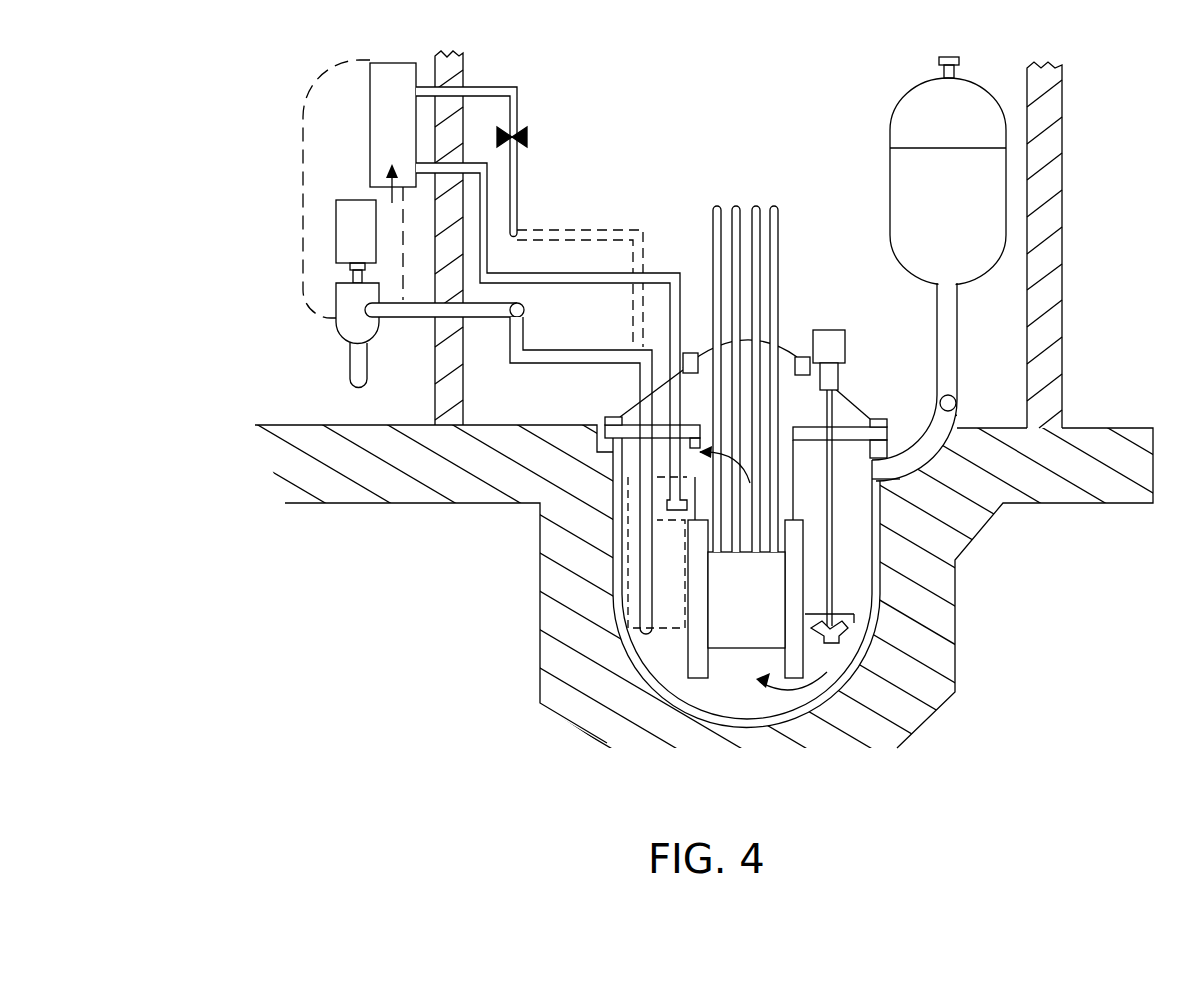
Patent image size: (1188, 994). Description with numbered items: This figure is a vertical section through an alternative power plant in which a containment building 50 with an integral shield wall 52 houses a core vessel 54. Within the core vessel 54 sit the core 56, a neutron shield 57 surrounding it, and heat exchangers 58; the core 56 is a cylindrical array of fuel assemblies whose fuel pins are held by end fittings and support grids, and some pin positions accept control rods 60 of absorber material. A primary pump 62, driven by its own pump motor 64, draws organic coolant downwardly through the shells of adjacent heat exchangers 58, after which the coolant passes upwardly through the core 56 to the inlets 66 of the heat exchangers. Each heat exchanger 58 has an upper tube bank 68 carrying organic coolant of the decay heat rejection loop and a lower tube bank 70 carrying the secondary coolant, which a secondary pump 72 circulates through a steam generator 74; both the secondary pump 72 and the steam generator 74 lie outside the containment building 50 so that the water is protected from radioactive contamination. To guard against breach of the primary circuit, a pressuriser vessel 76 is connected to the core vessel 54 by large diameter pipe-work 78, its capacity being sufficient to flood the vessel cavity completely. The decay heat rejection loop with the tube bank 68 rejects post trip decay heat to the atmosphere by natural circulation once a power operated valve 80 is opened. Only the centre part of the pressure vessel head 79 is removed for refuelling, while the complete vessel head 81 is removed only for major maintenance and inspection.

The containment building 50 is at (1042, 285).
The shield wall 52 is at (948, 638).
The core vessel 54 is at (877, 585).
The core 56 is at (747, 628).
The neutron shield 57 is at (697, 664).
The heat exchanger 58 is at (646, 637).
The control rod 60 is at (772, 233).
The primary pump 62 is at (850, 627).
The pump motor 64 is at (847, 340).
The inlet 66 is at (697, 465).
The upper tube bank 68 is at (662, 500).
The lower tube bank 70 is at (668, 558).
The secondary pump 72 is at (357, 328).
The steam generator 74 is at (328, 133).
The pressuriser vessel 76 is at (918, 172).
The pipe-work 78 is at (943, 423).
The pressure vessel head 79 is at (790, 350).
The power operated valve 80 is at (532, 134).
The complete vessel head 81 is at (868, 416).